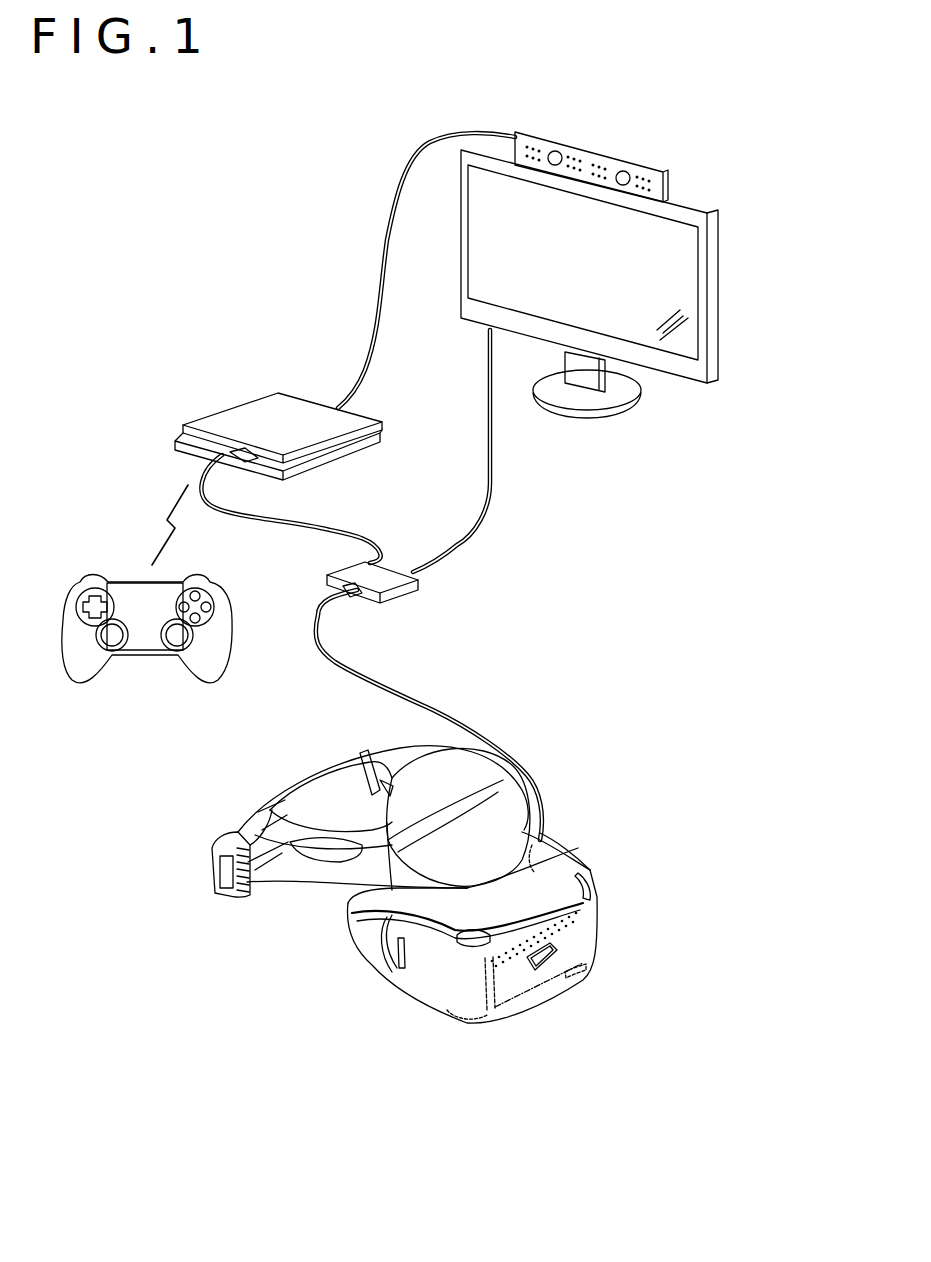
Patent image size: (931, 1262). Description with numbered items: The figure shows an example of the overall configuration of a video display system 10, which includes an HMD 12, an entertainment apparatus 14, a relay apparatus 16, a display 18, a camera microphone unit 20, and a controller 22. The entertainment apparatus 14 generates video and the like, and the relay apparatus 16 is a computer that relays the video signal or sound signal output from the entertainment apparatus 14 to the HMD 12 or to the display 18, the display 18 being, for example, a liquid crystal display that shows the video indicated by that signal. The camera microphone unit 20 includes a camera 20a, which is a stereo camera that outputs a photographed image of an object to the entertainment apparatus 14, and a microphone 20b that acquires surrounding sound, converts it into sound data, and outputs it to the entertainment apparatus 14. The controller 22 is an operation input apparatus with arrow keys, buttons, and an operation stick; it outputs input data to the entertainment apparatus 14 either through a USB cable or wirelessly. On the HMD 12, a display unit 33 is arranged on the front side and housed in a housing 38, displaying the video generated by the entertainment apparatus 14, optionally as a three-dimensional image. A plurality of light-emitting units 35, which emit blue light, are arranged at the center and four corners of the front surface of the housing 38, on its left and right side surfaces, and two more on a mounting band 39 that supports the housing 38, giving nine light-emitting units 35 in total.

The video display system 10 is at (702, 1013).
The HMD 12 is at (425, 906).
The entertainment apparatus 14 is at (228, 412).
The relay apparatus 16 is at (420, 577).
The display 18 is at (722, 297).
The camera microphone unit 20 is at (618, 162).
The camera 20a is at (550, 175).
The microphone 20b is at (582, 146).
The controller 22 is at (232, 633).
The display unit 33 is at (592, 927).
The light-emitting unit 35 is at (357, 778).
The housing 38 is at (423, 987).
The mounting band 39 is at (225, 822).